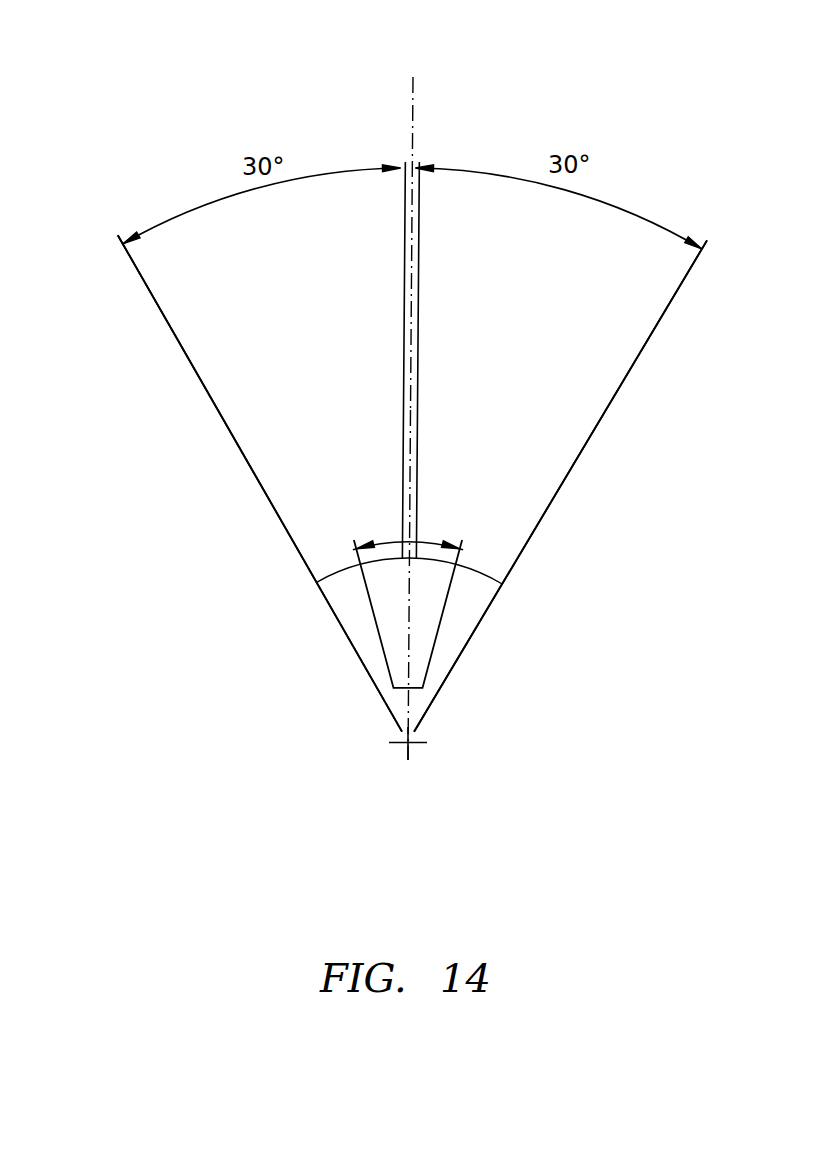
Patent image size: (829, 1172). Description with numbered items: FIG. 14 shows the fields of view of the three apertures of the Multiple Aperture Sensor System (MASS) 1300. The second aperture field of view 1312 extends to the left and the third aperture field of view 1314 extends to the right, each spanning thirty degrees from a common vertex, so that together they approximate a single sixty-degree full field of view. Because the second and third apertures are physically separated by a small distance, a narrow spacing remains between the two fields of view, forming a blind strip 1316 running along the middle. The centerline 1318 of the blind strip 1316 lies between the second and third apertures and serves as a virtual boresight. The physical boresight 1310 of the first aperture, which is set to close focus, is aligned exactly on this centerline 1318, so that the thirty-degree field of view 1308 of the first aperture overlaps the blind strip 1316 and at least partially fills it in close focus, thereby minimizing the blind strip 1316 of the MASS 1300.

The Multiple Aperture Sensor System (MASS) 1300 is at (467, 740).
The field of view of the first aperture 1308 is at (438, 598).
The physical boresight 1310 is at (415, 86).
The second aperture field of view 1312 is at (227, 350).
The third aperture field of view 1314 is at (640, 300).
The blind strip 1316 is at (420, 258).
The centerline of the blind strip 1318 is at (415, 372).